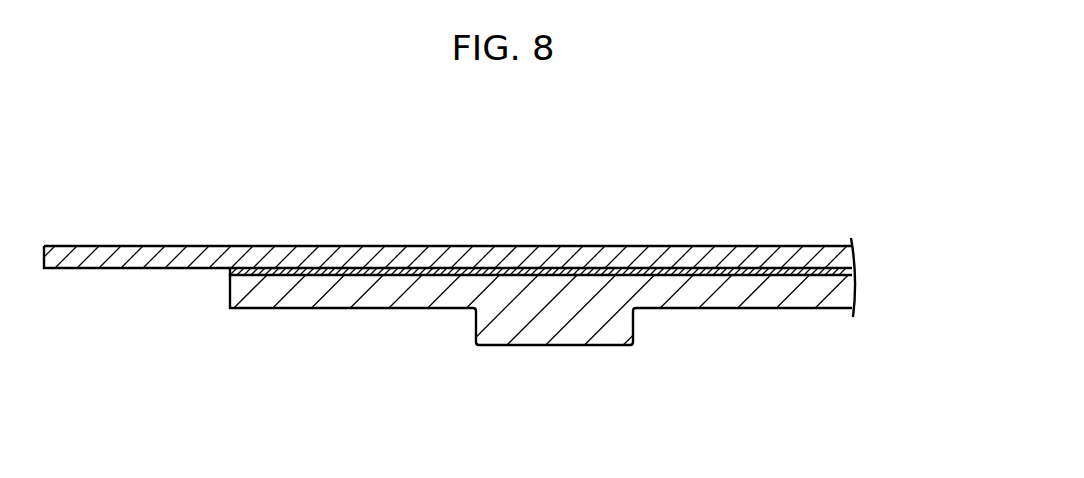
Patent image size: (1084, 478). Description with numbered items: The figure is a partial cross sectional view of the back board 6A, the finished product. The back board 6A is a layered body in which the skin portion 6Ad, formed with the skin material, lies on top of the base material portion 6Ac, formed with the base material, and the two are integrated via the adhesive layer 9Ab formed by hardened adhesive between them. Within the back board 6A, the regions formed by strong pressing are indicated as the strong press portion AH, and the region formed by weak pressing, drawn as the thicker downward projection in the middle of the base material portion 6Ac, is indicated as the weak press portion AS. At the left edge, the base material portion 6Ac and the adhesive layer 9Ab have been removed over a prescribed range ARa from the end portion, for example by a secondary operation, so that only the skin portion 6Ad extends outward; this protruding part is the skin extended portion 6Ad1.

The back board 6A is at (500, 283).
The skin portion 6Ad is at (855, 253).
The skin extended portion 6Ad1 is at (142, 236).
The adhesive layer 9Ab is at (853, 270).
The base material portion 6Ac is at (843, 293).
The strong press portion AH is at (375, 310).
The weak press portion AS is at (560, 346).
The prescribed range ARa is at (44, 278).